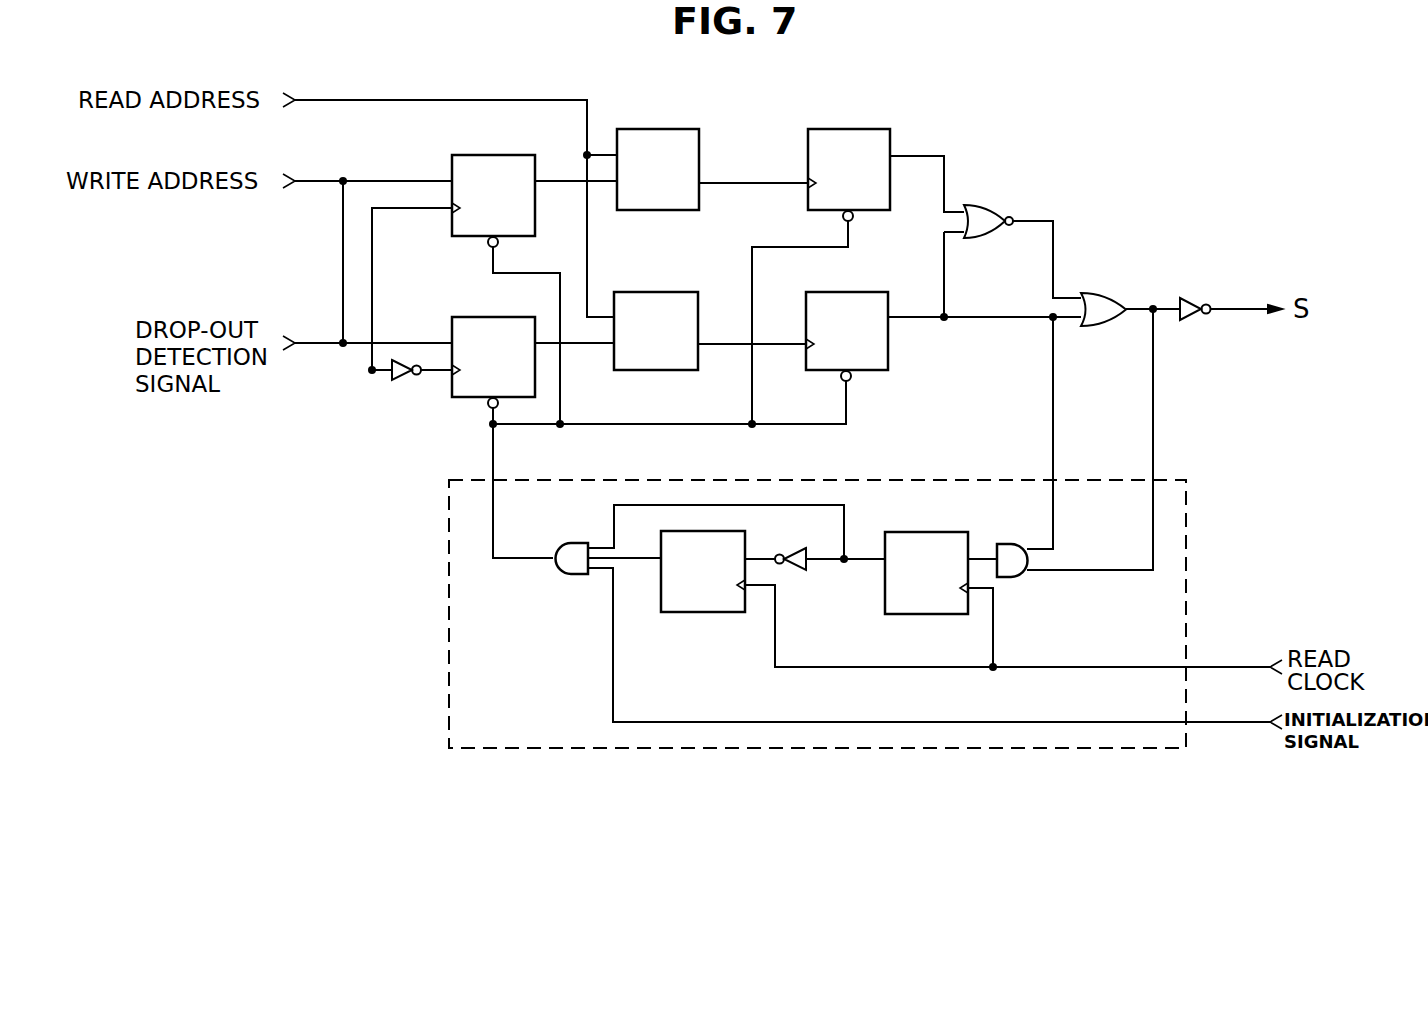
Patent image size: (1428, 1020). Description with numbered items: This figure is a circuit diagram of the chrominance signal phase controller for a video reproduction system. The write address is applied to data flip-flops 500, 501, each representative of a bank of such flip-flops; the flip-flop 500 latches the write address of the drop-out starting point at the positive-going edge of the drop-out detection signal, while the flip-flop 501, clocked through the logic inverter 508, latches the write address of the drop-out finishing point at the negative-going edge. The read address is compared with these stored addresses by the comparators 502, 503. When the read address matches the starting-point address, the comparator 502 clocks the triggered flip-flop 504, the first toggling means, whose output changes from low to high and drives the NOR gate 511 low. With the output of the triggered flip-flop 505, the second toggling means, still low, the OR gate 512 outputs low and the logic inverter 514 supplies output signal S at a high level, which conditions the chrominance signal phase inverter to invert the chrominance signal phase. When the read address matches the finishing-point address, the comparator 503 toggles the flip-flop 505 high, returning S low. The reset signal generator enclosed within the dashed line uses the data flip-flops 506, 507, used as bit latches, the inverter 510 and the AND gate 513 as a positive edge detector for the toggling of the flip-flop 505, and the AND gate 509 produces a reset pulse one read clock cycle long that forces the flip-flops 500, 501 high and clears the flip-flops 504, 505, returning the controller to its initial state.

The flip-flop 500 is at (493, 155).
The flip-flop 501 is at (493, 317).
The comparator 502 is at (655, 129).
The comparator 503 is at (655, 292).
The flip-flop 504 is at (847, 129).
The flip-flop 505 is at (868, 292).
The flip-flop 506 is at (704, 612).
The flip-flop 507 is at (927, 614).
The logic inverter 508 is at (404, 383).
The AND gate 509 is at (571, 575).
The inverter 510 is at (806, 570).
The NOR gate 511 is at (985, 206).
The OR gate 512 is at (1096, 293).
The AND gate 513 is at (1018, 577).
The logic inverter 514 is at (1190, 298).